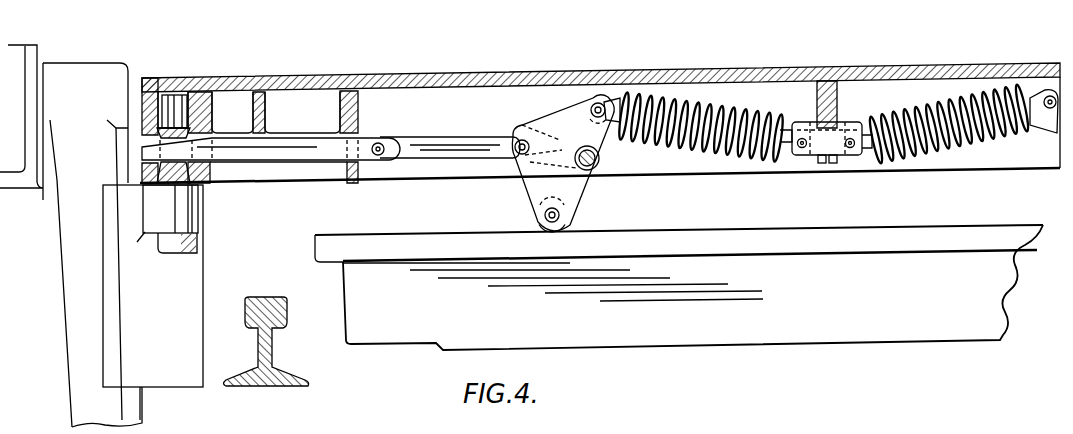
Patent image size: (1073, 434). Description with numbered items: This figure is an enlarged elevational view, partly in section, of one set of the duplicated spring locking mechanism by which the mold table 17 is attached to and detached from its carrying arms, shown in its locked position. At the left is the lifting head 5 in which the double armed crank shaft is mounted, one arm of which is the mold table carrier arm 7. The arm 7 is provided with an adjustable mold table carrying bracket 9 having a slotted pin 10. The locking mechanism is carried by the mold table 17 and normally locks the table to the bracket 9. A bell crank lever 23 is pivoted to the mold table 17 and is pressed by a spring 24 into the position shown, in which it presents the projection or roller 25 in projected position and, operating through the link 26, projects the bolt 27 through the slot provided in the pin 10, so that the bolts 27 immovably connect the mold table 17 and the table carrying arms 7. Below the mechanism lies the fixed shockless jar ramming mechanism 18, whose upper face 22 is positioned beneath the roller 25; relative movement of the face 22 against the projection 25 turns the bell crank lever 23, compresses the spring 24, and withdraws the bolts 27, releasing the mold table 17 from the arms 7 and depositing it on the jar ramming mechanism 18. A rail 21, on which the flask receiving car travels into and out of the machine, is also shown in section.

The lifting head 5 is at (32, 50).
The mold table carrier arm 7 is at (62, 312).
The adjustable mold table carrying bracket 9 is at (192, 288).
The slotted pin 10 is at (178, 108).
The mold table 17 is at (420, 73).
The shockless jar ramming mechanism 18 is at (833, 335).
The rails 21 is at (267, 317).
The face of the jar ramming machine 22 is at (658, 230).
The bell crank lever 23 is at (562, 118).
The spring 24 is at (720, 112).
The projection or roller 25 is at (535, 215).
The link 26 is at (447, 140).
The bolt 27 is at (290, 138).